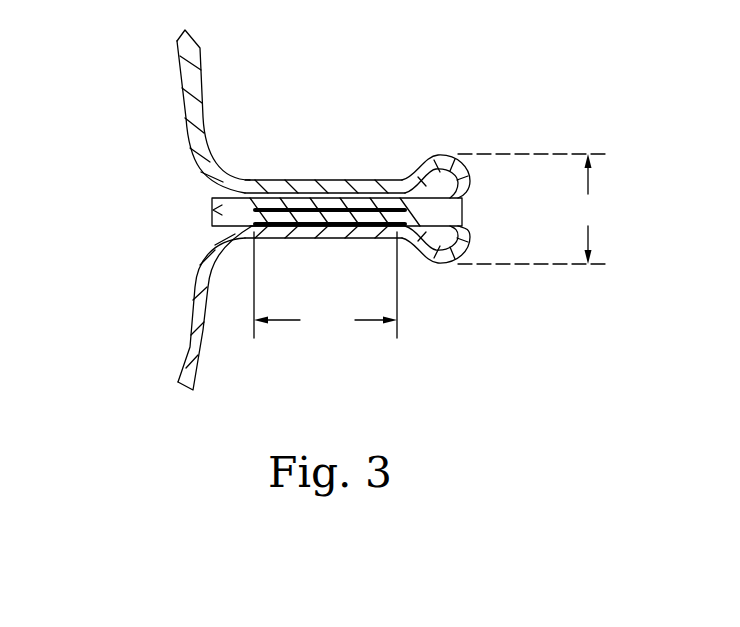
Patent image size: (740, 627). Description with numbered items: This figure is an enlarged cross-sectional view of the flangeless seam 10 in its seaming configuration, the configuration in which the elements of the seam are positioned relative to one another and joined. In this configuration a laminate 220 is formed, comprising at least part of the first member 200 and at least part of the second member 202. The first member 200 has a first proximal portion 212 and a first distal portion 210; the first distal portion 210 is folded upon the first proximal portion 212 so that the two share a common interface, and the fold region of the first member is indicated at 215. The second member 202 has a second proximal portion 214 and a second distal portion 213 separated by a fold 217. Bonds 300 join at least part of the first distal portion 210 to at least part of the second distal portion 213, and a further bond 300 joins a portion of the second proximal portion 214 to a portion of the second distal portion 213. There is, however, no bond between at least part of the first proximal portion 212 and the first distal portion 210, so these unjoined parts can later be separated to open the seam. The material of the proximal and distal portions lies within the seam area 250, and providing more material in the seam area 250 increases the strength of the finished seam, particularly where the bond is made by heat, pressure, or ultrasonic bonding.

The flangeless seam 10 is at (170, 220).
The first member 200 is at (201, 51).
The second member 202 is at (210, 343).
The first distal portion 210 is at (456, 204).
The first proximal portion 212 is at (333, 184).
The second distal portion 213 is at (437, 250).
The second proximal portion 214 is at (275, 238).
The upper hook 215 is at (468, 165).
The fold 217 is at (456, 252).
The laminate 220 is at (536, 209).
The seam area 250 is at (325, 285).
The bond 300 is at (313, 213).